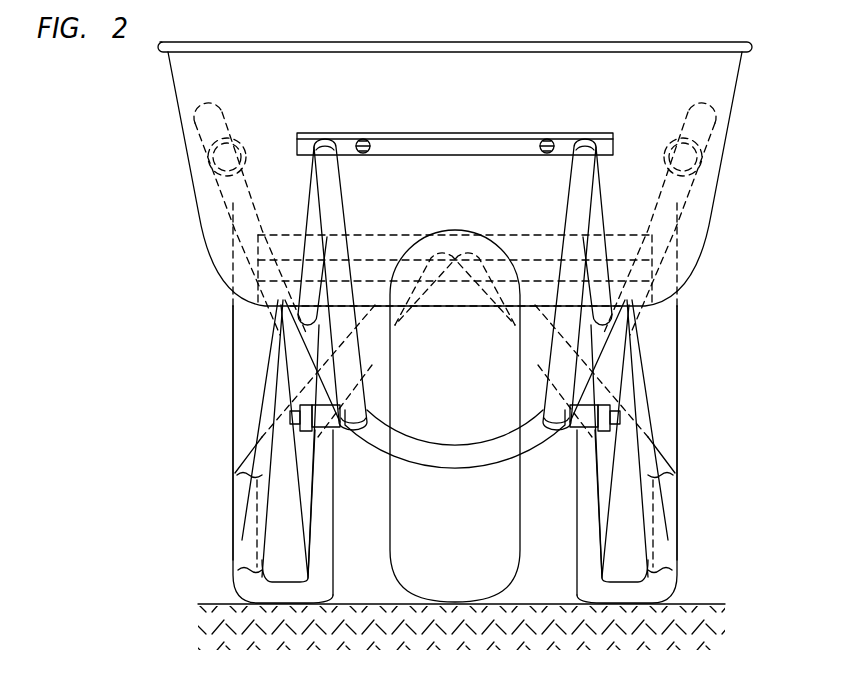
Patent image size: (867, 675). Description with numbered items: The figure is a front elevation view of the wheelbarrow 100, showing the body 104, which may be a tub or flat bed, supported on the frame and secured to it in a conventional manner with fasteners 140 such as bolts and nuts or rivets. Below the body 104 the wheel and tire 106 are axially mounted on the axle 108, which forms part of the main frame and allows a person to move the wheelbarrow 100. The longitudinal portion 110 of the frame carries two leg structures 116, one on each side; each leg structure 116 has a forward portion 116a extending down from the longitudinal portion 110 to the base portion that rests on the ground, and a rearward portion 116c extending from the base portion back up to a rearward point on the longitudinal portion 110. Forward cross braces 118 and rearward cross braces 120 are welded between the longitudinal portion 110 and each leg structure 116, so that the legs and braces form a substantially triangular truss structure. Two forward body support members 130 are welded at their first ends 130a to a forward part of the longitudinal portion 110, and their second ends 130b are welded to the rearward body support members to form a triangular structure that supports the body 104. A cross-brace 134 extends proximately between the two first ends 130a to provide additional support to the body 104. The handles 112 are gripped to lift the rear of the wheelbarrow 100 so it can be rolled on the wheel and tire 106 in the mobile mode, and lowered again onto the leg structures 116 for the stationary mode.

The wheelbarrow 100 is at (145, 123).
The body 104 is at (401, 36).
The wheel and tire 106 is at (474, 560).
The axle 108 is at (290, 416).
The longitudinal portion 110 is at (414, 460).
The handles 112 is at (210, 110).
The leg structure 116 is at (261, 614).
The forward portion 116a is at (326, 508).
The rearward portion 116c is at (240, 357).
The forward cross brace 118 is at (305, 475).
The rearward cross brace 120 is at (258, 482).
The forward body support member 130 is at (338, 210).
The first end of forward body support member 130a is at (331, 152).
The second end of forward body support member 130b is at (352, 402).
The cross-brace 134 is at (413, 140).
The fasteners 140 is at (364, 138).